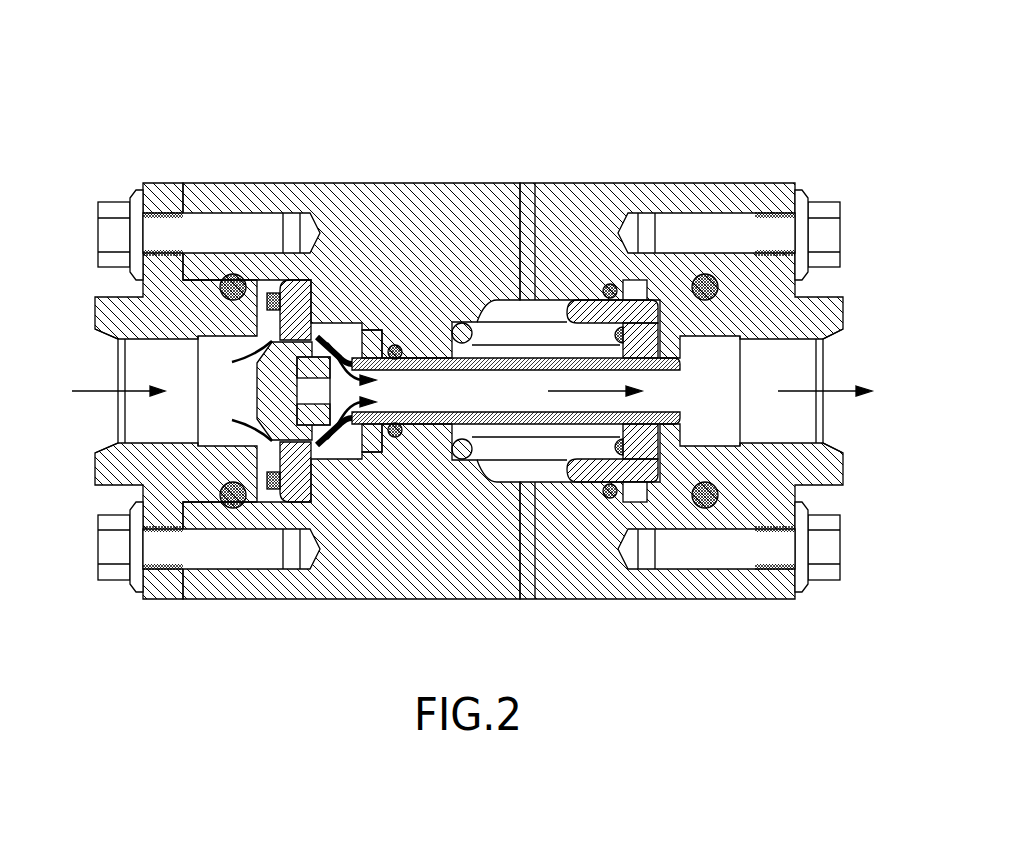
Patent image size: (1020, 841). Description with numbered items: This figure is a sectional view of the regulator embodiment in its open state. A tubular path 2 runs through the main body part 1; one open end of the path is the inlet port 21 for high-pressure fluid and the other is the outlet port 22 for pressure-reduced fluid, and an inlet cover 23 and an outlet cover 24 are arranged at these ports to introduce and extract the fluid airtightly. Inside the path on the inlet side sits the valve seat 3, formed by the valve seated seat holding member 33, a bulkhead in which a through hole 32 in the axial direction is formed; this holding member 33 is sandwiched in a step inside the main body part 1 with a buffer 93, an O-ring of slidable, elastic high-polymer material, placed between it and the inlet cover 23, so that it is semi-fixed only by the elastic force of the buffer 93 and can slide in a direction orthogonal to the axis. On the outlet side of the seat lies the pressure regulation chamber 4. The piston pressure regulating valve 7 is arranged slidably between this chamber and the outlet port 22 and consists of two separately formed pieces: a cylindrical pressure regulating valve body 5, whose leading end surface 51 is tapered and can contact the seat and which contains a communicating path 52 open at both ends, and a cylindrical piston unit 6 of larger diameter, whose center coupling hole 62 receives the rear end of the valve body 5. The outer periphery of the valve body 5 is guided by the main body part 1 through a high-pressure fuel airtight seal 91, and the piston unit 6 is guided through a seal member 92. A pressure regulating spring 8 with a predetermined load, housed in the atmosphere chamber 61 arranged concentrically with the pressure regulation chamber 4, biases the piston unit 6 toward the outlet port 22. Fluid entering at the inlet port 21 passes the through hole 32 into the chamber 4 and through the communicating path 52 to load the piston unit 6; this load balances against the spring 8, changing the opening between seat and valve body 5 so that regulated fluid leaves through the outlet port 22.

The main body part 1 is at (618, 205).
The path 2 is at (378, 242).
The valve seat 3 is at (243, 262).
The pressure regulation chamber 4 is at (355, 447).
The pressure regulating valve body 5 is at (488, 371).
The leading end surface 51 is at (350, 318).
The communicating path 52 is at (450, 402).
The piston unit 6 is at (561, 371).
The atmosphere chamber 61 is at (508, 310).
The coupling hole 62 is at (650, 285).
The piston pressure regulating valve 7 is at (488, 342).
The pressure regulating spring 8 is at (537, 450).
The high-pressure fuel airtight seal 91 is at (397, 433).
The seal member 92 is at (609, 498).
The buffer 93 is at (272, 490).
The inlet port 21 is at (107, 415).
The outlet port 22 is at (833, 417).
The inlet cover 23 is at (112, 312).
The outlet cover 24 is at (833, 317).
The through hole 32 is at (276, 293).
The valve seated seat holding member 33 is at (233, 495).